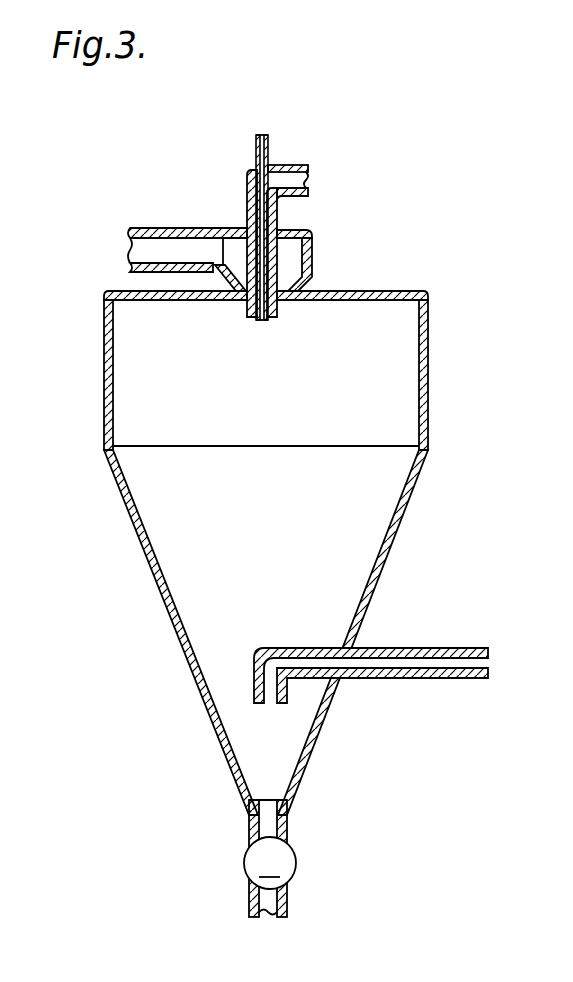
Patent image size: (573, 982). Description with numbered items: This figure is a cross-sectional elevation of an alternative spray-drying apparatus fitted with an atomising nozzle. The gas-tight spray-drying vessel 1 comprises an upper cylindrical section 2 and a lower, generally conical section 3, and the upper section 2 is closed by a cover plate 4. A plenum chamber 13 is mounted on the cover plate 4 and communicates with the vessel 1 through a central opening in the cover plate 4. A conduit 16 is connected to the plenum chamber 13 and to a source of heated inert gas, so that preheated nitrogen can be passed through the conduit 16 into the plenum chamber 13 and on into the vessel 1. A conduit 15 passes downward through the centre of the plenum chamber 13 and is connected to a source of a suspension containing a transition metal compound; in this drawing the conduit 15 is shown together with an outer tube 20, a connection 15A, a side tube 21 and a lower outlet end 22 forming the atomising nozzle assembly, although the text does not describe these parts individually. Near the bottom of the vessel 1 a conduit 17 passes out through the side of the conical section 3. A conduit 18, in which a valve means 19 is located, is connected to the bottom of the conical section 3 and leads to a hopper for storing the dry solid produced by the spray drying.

The spray-drying vessel 1 is at (264, 521).
The upper cylindrical section 2 is at (428, 387).
The conical section 3 is at (153, 580).
The cover plate 4 is at (403, 290).
The plenum chamber 13 is at (312, 250).
The conduit 15 is at (255, 139).
The flange connection 15A is at (302, 209).
The conduit 16 is at (142, 228).
The conduit 17 is at (462, 648).
The conduit 18 is at (249, 898).
The valve means 19 is at (297, 860).
The outer tube 20 is at (247, 205).
The supply tube 21 is at (296, 165).
The tube outlet end 22 is at (255, 322).